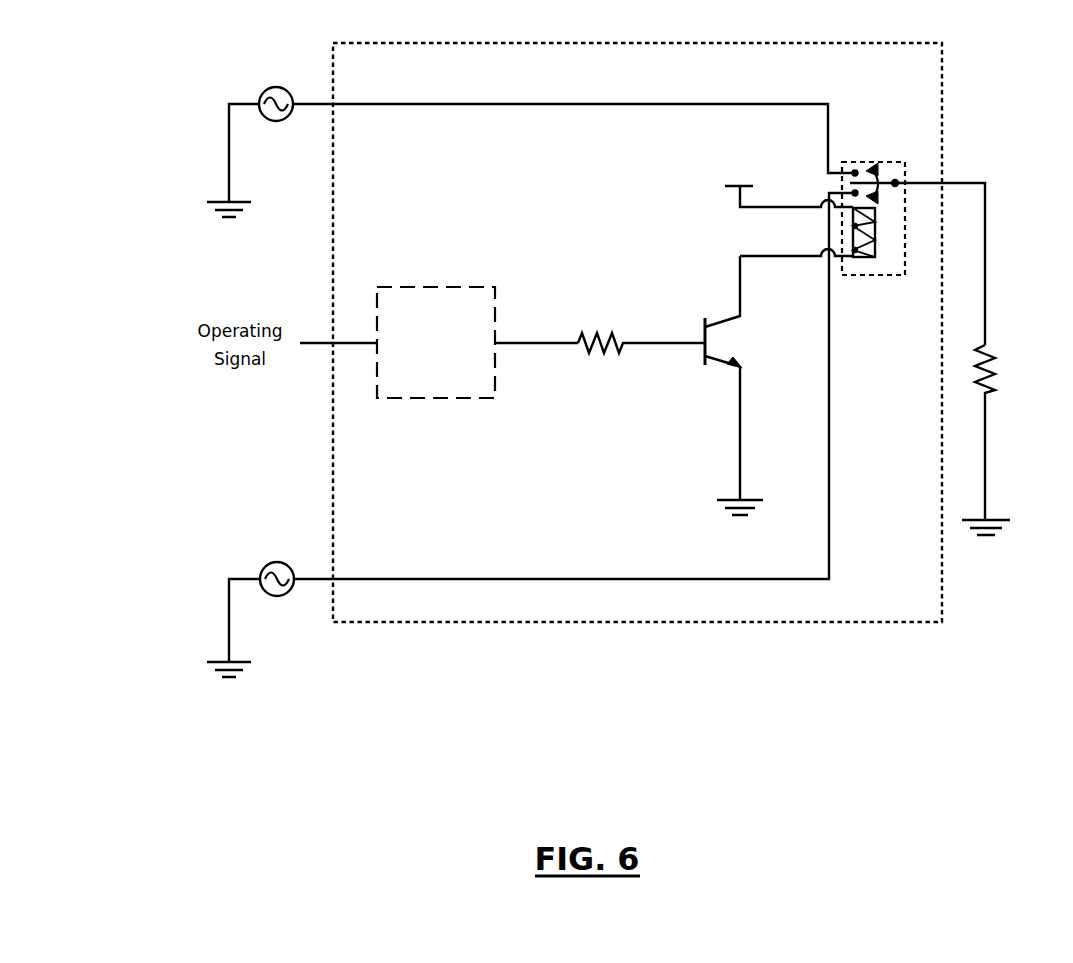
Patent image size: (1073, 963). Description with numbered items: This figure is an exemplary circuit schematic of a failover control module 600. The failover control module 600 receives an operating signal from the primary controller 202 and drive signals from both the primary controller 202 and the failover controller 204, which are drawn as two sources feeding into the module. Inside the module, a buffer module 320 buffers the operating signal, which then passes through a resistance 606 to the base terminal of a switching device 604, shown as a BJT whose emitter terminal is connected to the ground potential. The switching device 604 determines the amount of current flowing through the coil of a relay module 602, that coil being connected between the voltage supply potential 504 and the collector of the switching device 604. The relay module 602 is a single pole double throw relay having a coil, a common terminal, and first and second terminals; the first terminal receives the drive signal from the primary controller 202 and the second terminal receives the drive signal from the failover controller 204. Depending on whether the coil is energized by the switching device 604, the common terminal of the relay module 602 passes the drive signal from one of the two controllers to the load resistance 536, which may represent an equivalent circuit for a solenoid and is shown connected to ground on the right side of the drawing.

The failover control module 600 is at (946, 62).
The failover controller 204 is at (275, 86).
The primary controller 202 is at (277, 561).
The buffer module 320 is at (460, 287).
The resistance 606 is at (598, 334).
The switching device 604 is at (705, 360).
The voltage supply potential 504 is at (729, 186).
The relay module 602 is at (871, 162).
The load resistance 536 is at (995, 362).